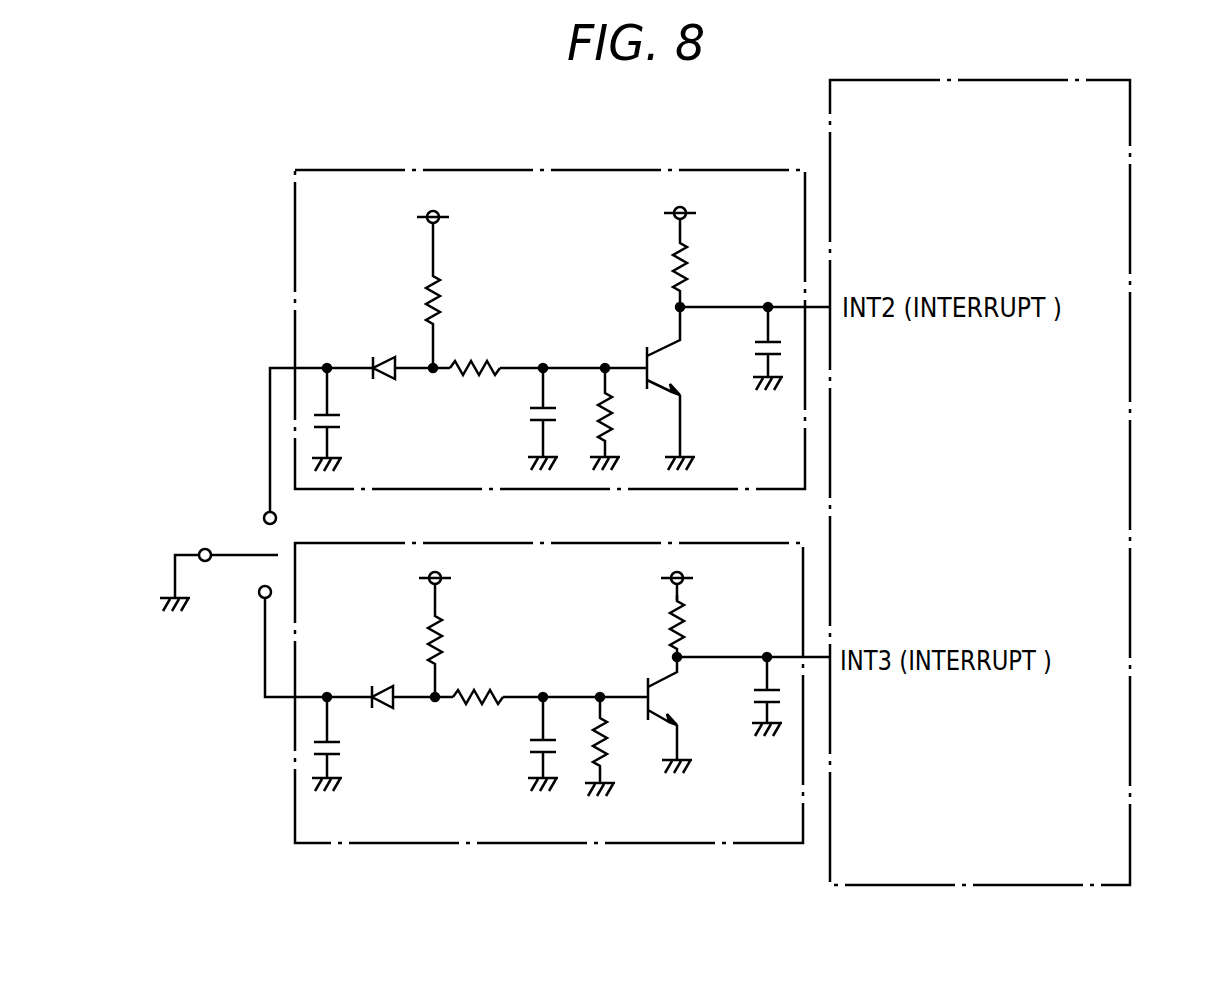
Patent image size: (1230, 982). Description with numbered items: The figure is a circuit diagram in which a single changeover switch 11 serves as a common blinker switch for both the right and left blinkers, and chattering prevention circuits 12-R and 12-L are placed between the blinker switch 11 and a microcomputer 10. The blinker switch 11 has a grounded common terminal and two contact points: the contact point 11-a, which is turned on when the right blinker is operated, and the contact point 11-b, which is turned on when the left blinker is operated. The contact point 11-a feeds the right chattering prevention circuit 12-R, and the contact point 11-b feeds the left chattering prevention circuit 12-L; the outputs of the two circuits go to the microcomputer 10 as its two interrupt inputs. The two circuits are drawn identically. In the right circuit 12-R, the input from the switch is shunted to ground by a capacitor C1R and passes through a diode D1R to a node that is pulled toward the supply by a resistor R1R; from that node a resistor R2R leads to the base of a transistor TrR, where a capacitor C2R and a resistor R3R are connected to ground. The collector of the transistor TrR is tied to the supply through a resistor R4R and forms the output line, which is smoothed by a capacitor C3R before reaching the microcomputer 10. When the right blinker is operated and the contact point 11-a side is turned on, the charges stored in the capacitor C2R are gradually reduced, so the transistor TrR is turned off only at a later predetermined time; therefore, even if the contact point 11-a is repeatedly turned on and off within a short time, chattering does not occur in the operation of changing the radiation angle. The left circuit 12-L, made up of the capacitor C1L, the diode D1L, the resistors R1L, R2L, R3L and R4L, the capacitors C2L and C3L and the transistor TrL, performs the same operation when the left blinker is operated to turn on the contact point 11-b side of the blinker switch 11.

The microcomputer 10 is at (1130, 100).
The changeover switch 11 is at (243, 532).
The contact point 11-a is at (265, 513).
The contact point 11-b is at (262, 594).
The chattering prevention circuit 12-R is at (625, 170).
The chattering prevention circuit 12-L is at (568, 845).
The resistor R1R is at (455, 289).
The resistor R2R is at (478, 385).
The resistor R3R is at (627, 419).
The resistor R4R is at (702, 257).
The capacitor C1R is at (352, 419).
The capacitor C2R is at (560, 419).
The capacitor C3R is at (755, 348).
The diode D1R is at (390, 355).
The transistor TrR is at (681, 388).
The resistor R1L is at (456, 634).
The resistor R2L is at (478, 714).
The resistor R3L is at (621, 746).
The resistor R4L is at (698, 614).
The capacitor C1L is at (351, 744).
The capacitor C2L is at (560, 744).
The capacitor C3L is at (747, 696).
The diode D1L is at (384, 681).
The transistor TrL is at (678, 715).